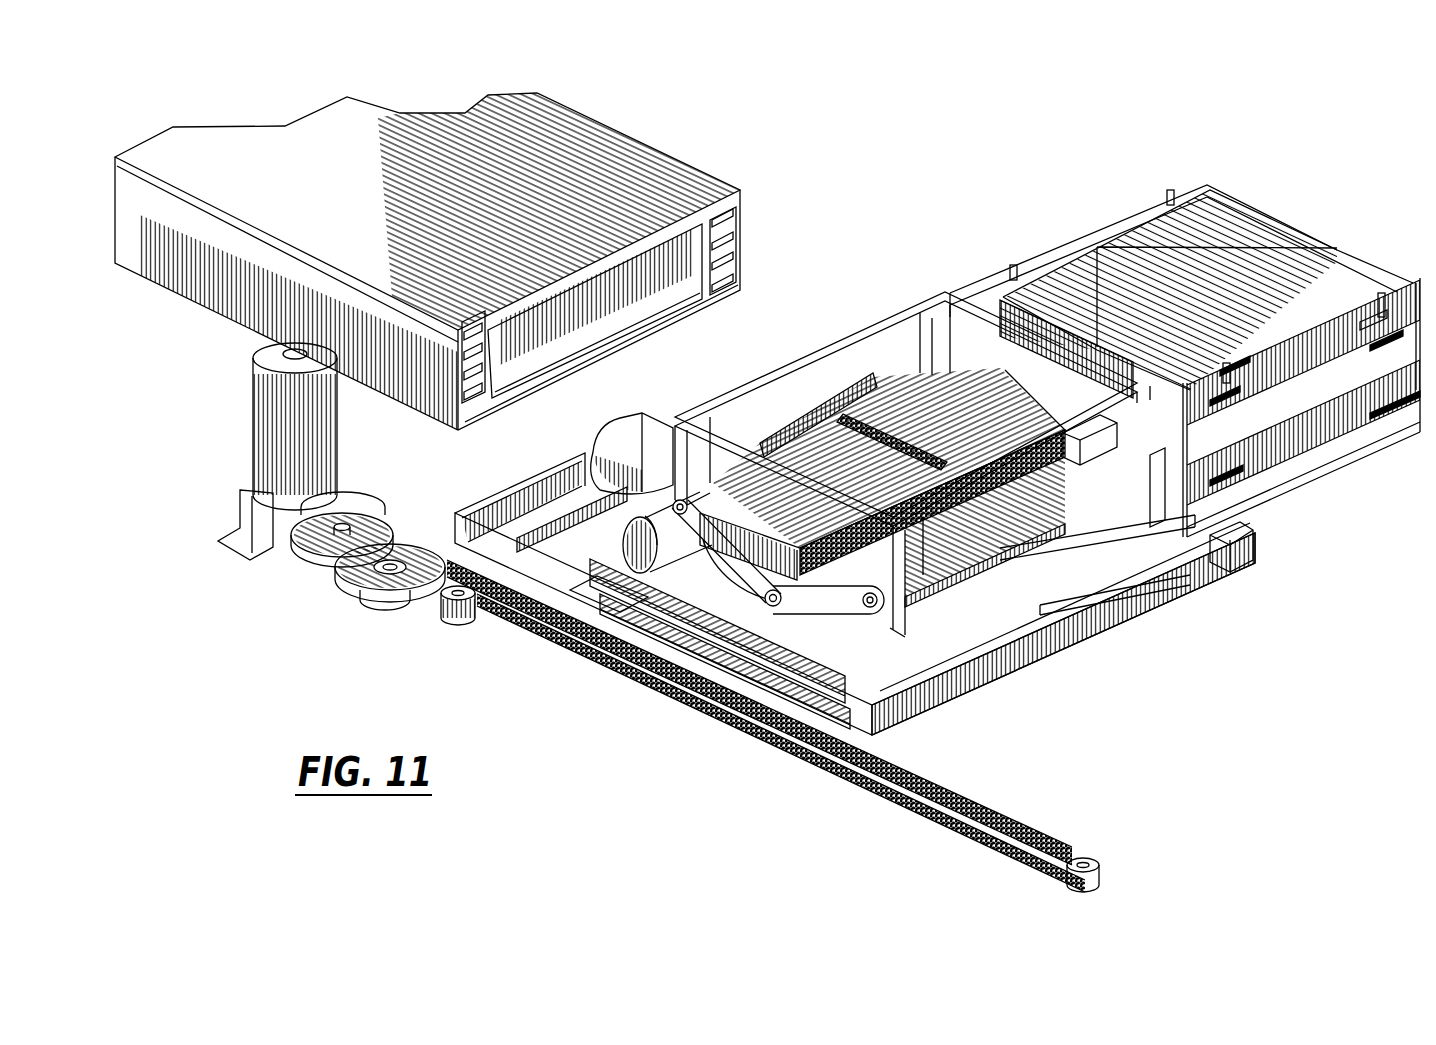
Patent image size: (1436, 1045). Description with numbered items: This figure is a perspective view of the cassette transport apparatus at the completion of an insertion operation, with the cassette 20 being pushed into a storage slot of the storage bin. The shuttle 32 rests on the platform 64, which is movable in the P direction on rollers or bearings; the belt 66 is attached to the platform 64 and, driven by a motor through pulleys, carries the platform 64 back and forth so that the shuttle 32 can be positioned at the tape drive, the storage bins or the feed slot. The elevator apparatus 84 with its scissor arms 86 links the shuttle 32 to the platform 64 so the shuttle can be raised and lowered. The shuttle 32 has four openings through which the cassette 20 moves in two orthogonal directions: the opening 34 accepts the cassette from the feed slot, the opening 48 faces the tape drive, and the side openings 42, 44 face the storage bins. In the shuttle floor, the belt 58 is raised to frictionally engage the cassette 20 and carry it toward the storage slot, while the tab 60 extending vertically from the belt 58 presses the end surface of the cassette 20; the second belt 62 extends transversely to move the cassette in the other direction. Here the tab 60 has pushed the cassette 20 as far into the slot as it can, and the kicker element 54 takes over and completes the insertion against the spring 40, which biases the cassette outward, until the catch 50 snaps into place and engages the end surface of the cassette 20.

The cassette 20 is at (1062, 282).
The shuttle 32 is at (1095, 598).
The opening 34 is at (1060, 557).
The spring 40 is at (1185, 356).
The side opening 42 is at (860, 367).
The side opening 44 is at (903, 403).
The opening 48 is at (855, 352).
The catch 50 is at (1190, 438).
The kicker element 54 is at (1125, 440).
The belt 58 is at (827, 537).
The tab 60 is at (1067, 420).
The second belt 62 is at (843, 432).
The platform 64 is at (973, 682).
The belt 66 is at (878, 798).
The elevator apparatus 84 is at (567, 580).
The scissor arms 86 is at (693, 665).